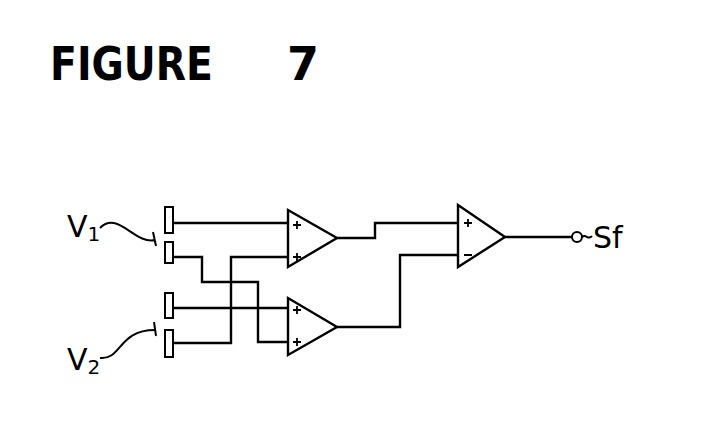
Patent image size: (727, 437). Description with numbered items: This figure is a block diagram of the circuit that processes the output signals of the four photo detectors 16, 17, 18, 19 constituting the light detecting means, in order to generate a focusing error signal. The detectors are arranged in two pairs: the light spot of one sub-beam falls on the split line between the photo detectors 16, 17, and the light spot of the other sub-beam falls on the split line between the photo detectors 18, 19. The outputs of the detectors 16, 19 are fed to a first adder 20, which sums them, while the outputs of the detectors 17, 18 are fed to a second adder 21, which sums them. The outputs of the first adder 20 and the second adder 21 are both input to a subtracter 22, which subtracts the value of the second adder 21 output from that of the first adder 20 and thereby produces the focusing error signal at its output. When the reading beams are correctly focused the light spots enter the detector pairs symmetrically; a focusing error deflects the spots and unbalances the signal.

The photo detector 16 is at (163, 213).
The photo detector 17 is at (165, 255).
The photo detector 18 is at (165, 298).
The photo detector 19 is at (165, 350).
The first adder 20 is at (318, 215).
The second adder 21 is at (312, 345).
The subtracter 22 is at (496, 218).